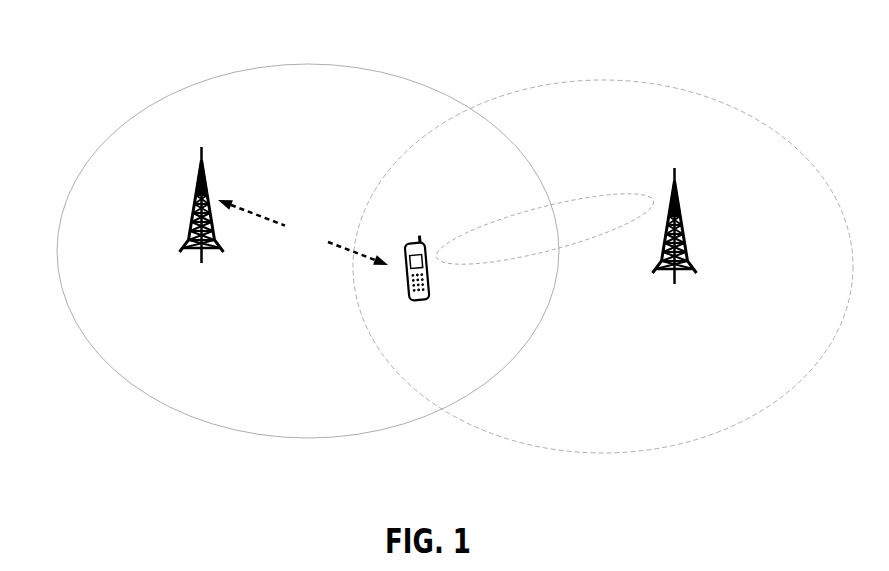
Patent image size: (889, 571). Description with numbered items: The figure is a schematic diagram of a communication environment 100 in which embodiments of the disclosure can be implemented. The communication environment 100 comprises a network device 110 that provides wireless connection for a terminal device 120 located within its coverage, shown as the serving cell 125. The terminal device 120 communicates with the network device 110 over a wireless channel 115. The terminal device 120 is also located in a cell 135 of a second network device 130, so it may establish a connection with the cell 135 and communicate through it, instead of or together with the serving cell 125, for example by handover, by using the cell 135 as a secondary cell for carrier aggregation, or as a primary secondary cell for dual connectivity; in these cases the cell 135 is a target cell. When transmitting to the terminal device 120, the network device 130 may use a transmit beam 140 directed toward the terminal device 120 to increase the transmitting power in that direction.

The communication environment 100 is at (101, 45).
The network device 110 is at (204, 170).
The wireless channel 115 is at (303, 232).
The terminal device 120 is at (412, 240).
The serving cell 125 is at (322, 66).
The network device 130 is at (678, 193).
The cell 135 is at (655, 84).
The transmit beam 140 is at (577, 200).